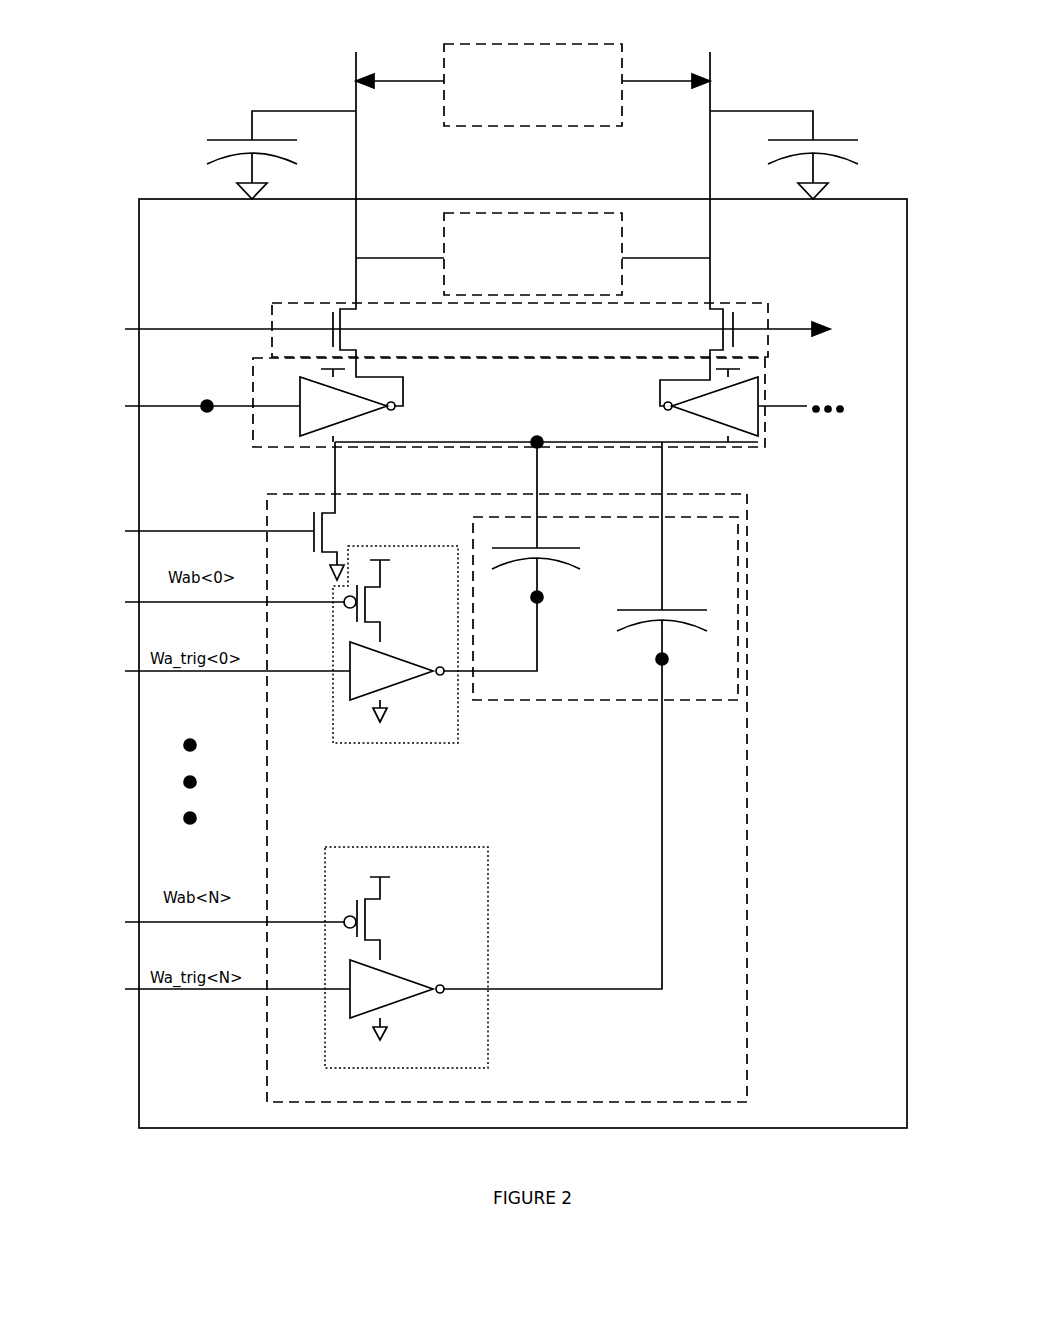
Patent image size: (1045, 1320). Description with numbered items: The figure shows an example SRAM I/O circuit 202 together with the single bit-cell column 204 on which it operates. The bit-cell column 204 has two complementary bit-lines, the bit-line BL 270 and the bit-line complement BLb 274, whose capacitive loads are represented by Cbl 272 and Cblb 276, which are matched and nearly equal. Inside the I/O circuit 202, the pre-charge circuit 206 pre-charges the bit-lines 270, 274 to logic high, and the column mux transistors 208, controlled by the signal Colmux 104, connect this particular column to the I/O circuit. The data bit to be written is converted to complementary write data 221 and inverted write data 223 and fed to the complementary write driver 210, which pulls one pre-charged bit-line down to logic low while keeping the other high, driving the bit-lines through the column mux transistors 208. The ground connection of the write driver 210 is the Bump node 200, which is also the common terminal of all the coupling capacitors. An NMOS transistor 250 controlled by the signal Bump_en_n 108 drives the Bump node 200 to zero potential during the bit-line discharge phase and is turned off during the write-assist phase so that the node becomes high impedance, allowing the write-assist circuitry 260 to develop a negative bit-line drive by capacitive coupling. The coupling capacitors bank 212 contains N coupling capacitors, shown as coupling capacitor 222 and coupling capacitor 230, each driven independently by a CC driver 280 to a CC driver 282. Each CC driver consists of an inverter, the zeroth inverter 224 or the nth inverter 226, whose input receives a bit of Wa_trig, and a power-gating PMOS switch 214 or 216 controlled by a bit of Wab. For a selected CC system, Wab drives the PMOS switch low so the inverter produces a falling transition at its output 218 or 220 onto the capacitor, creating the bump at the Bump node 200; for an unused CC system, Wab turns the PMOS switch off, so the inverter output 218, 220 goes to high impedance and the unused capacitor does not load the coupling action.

The I/O circuit 202 is at (718, 1128).
The bit-line (BL) 270 is at (370, 44).
The bit-line complement (BLb) 274 is at (725, 42).
The Cbl 272 is at (220, 140).
The Cblb 276 is at (843, 140).
The bit-cell column 204 is at (575, 126).
The pre-charge circuit 206 is at (460, 213).
The column mux transistors 208 is at (822, 283).
The Colmux 104 is at (133, 329).
The complementary write driver 210 is at (847, 621).
The write data 221 is at (162, 407).
The inverted write data 223 is at (795, 410).
The Bump node 200 is at (534, 441).
The write-assist circuitry 260 is at (836, 1025).
The NMOS transistor 250 is at (340, 540).
The Bump_en_n 108 is at (133, 531).
The CC driver 280 is at (520, 772).
The PMOS switch 214 is at (432, 591).
The zeroth inverter 224 is at (413, 700).
The CC driver 282 is at (482, 885).
The PMOS switch 216 is at (388, 909).
The nth inverter 226 is at (420, 1010).
The coupling capacitors bank 212 is at (712, 700).
The coupling capacitor 222 is at (505, 560).
The inverter output signal 218 is at (537, 625).
The coupling capacitor 230 is at (645, 609).
The inverter output signal 220 is at (662, 862).